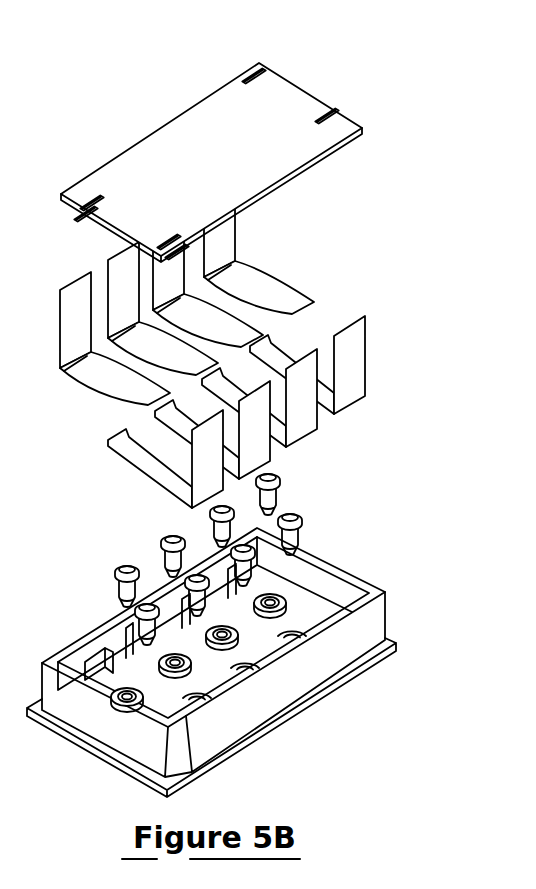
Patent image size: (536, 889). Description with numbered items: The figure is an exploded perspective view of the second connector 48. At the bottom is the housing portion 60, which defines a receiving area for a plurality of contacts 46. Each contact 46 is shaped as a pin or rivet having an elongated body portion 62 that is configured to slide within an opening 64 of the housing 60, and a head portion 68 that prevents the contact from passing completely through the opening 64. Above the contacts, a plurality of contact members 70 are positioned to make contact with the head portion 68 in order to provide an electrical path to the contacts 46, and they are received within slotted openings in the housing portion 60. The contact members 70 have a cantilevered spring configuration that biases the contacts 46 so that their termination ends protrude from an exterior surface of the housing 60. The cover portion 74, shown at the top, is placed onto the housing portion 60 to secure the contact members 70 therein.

The second connector 48 is at (368, 208).
The housing portion 60 is at (293, 703).
The elongated body portion 62 is at (300, 538).
The opening 64 is at (272, 598).
The head portion 68 is at (100, 610).
The contact member 70 is at (120, 262).
The cover portion 74 is at (263, 107).
The contact 46 is at (288, 472).